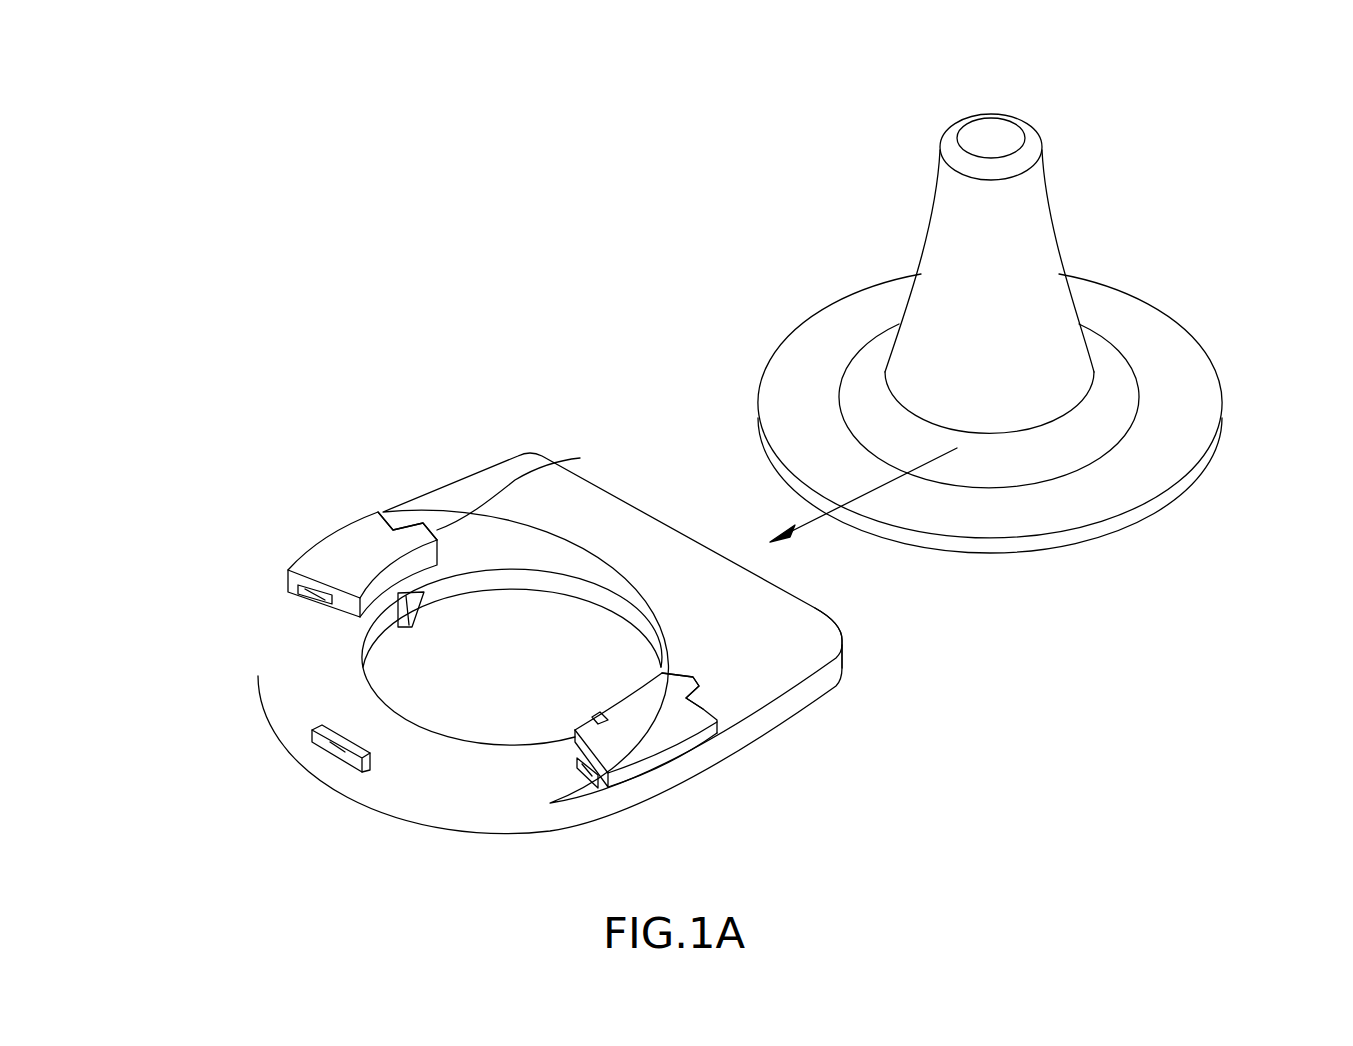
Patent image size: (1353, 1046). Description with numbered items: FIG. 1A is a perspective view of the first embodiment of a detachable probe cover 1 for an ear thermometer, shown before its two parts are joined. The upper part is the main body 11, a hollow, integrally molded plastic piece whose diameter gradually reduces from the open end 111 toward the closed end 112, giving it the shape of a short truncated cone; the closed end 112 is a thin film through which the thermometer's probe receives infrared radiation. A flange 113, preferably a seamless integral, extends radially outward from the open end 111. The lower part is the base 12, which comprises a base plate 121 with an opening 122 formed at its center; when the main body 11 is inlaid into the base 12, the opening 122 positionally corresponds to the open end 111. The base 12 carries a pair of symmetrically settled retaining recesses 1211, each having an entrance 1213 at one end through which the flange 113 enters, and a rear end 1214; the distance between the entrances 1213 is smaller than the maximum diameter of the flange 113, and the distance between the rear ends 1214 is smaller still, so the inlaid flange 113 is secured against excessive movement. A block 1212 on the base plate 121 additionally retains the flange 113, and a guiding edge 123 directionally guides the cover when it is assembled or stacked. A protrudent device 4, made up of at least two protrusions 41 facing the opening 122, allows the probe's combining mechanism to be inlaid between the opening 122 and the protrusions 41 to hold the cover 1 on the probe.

The detachable probe cover 1 is at (130, 86).
The main body 11 is at (1017, 257).
The open end 111 is at (1123, 527).
The closed end 112 is at (990, 138).
The flange 113 is at (1183, 393).
The base 12 is at (535, 657).
The base plate 121 is at (290, 620).
The opening 122 is at (390, 665).
The guiding edge 123 is at (818, 607).
The retaining recess 1211 is at (333, 567).
The block 1212 is at (310, 732).
The entrance 1213 is at (580, 458).
The rear end 1214 is at (290, 572).
The protrudent device 4 is at (503, 658).
The protrusion 41 is at (400, 598).